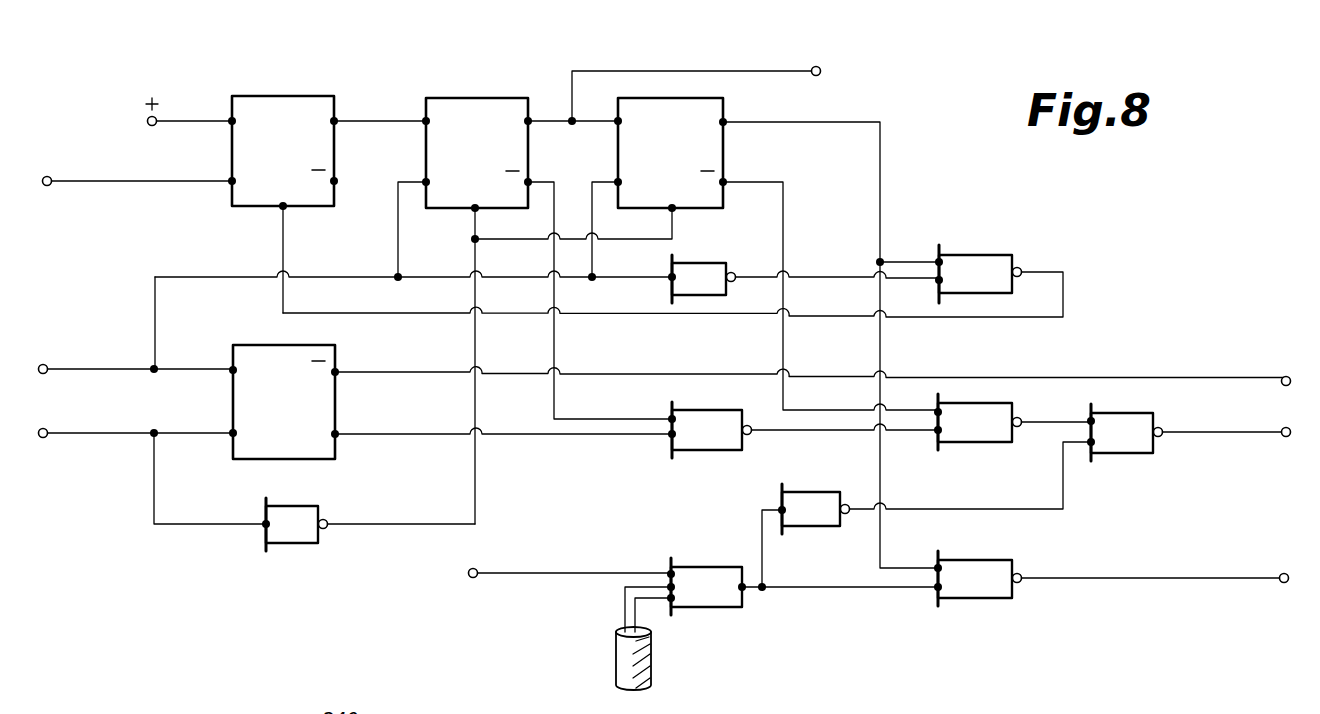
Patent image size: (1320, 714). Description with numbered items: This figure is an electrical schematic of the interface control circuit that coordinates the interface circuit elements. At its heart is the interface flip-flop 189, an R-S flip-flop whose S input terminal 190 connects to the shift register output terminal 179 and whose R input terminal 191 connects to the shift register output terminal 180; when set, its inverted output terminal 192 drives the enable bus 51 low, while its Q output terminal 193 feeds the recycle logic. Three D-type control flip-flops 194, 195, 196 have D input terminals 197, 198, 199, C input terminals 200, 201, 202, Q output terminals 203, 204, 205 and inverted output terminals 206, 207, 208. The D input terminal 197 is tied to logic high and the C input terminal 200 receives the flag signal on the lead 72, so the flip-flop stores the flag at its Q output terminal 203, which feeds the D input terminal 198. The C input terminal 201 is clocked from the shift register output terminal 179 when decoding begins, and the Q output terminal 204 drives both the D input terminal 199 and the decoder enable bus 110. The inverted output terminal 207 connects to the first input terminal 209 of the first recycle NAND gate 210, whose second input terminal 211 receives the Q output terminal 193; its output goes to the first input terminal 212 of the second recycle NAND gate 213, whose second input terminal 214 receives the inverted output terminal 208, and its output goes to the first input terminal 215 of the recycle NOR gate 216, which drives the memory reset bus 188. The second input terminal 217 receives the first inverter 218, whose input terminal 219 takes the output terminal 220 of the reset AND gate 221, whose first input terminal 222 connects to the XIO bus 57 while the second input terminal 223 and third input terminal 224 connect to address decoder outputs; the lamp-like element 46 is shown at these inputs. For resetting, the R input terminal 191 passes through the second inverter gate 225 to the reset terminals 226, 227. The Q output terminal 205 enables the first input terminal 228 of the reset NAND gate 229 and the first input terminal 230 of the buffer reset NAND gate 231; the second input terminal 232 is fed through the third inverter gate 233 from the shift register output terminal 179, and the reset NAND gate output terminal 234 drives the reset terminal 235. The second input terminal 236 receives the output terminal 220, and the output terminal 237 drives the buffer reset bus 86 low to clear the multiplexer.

The first control flip-flop 194 is at (300, 166).
The second control flip-flop 195 is at (496, 166).
The third control flip-flop 196 is at (688, 164).
The interface flip-flop 189 is at (304, 411).
The D input terminal 197 is at (232, 121).
The D input terminal 198 is at (416, 114).
The D input terminal 199 is at (618, 121).
The C input terminal 200 is at (232, 181).
The C input terminal 201 is at (424, 181).
The C input terminal 202 is at (618, 182).
The Q output terminal 203 is at (334, 121).
The Q output terminal 204 is at (528, 120).
The Q output terminal 205 is at (723, 122).
The Q-bar output terminal 206 is at (334, 181).
The Q-bar output terminal 207 is at (528, 182).
The Q-bar output terminal 208 is at (723, 182).
The reset terminal 235 is at (283, 206).
The reset terminal 226 is at (475, 208).
The reset terminal 227 is at (672, 208).
The lead 72 is at (47, 176).
The decoder enable bus 110 is at (819, 66).
The third inverter gate 233 is at (708, 295).
The reset NAND gate 229 is at (1000, 255).
The first input terminal 228 is at (939, 262).
The second input terminal 232 is at (939, 280).
The reset NAND gate output terminal 234 is at (1022, 272).
The S input terminal 190 is at (233, 368).
The R input terminal 191 is at (233, 433).
The Q-bar output terminal 192 is at (335, 372).
The Q output terminal 193 is at (335, 434).
The shift register output terminal 179 is at (46, 364).
The shift register output terminal 180 is at (45, 438).
The enable bus 51 is at (1278, 358).
The second inverter gate 225 is at (290, 543).
The first recycle NAND gate 210 is at (700, 410).
The first input terminal 209 is at (672, 419).
The second input terminal 211 is at (672, 434).
The second recycle NAND gate 213 is at (1000, 403).
The second input terminal 214 is at (938, 412).
The first input terminal 212 is at (938, 430).
The recycle NOR gate 216 is at (1150, 413).
The first input terminal 215 is at (1091, 421).
The second input terminal 217 is at (1091, 442).
The memory reset bus 188 is at (1283, 437).
The first inverter 218 is at (810, 526).
The input terminal 219 is at (782, 510).
The reset AND gate 221 is at (714, 607).
The first input terminal 222 is at (671, 574).
The second input terminal 223 is at (671, 587).
The third input terminal 224 is at (671, 598).
The output terminal 220 is at (748, 587).
The XIO bus 57 is at (468, 574).
The lamp 46 is at (623, 650).
The buffer reset NAND gate 231 is at (975, 598).
The first input terminal 230 is at (938, 568).
The second input terminal 236 is at (938, 587).
The output terminal 237 is at (1022, 578).
The buffer reset bus 86 is at (1282, 583).